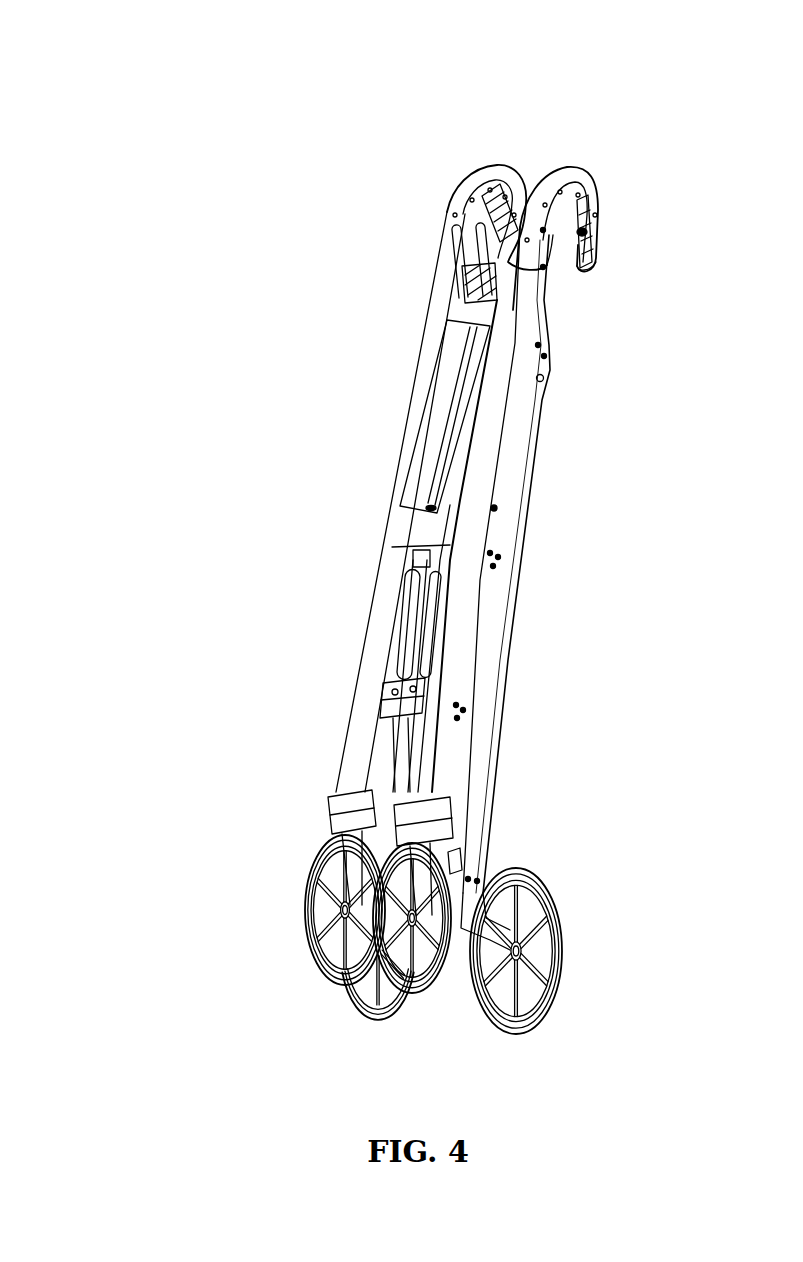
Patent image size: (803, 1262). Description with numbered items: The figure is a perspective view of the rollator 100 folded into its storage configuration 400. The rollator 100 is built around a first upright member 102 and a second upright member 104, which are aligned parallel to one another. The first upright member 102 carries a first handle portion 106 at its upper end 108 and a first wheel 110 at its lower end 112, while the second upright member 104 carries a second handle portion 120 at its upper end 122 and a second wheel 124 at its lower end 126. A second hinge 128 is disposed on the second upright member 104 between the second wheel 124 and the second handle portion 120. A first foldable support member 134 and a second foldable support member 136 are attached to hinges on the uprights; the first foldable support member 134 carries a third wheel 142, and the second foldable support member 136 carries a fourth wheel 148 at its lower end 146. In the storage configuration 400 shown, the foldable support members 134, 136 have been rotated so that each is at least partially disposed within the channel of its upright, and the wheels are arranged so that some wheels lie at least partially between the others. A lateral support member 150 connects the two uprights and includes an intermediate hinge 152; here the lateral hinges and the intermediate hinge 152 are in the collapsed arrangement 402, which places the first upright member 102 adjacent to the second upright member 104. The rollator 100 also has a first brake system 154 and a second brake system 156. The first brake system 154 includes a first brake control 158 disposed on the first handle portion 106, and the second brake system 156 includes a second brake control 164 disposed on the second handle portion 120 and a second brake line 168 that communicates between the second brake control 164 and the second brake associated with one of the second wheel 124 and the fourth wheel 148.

The rollator 100 is at (226, 92).
The first upright member 102 is at (425, 325).
The second upright member 104 is at (503, 498).
The first handle portion 106 is at (488, 160).
The upper end of the first upright member 108 is at (416, 225).
The first wheel 110 is at (310, 968).
The lower end of the first upright member 112 is at (304, 801).
The second handle portion 120 is at (553, 175).
The upper end of the second upright member 122 is at (559, 289).
The second wheel 124 is at (420, 996).
The lower end of the second upright member 126 is at (384, 816).
The second hinge 128 is at (550, 378).
The first foldable support member 134 is at (398, 766).
The second foldable support member 136 is at (510, 683).
The third wheel 142 is at (352, 1012).
The lower end of the second foldable support member 146 is at (506, 843).
The fourth wheel 148 is at (555, 983).
The lateral support member 150 is at (455, 397).
The intermediate hinge 152 is at (462, 349).
The first brake system 154 is at (458, 293).
The second brake system 156 is at (592, 276).
The first brake control 158 is at (447, 263).
The second brake control 164 is at (597, 232).
The second brake line 168 is at (453, 857).
The storage configuration 400 is at (330, 267).
The collapsed arrangement 402 is at (374, 548).